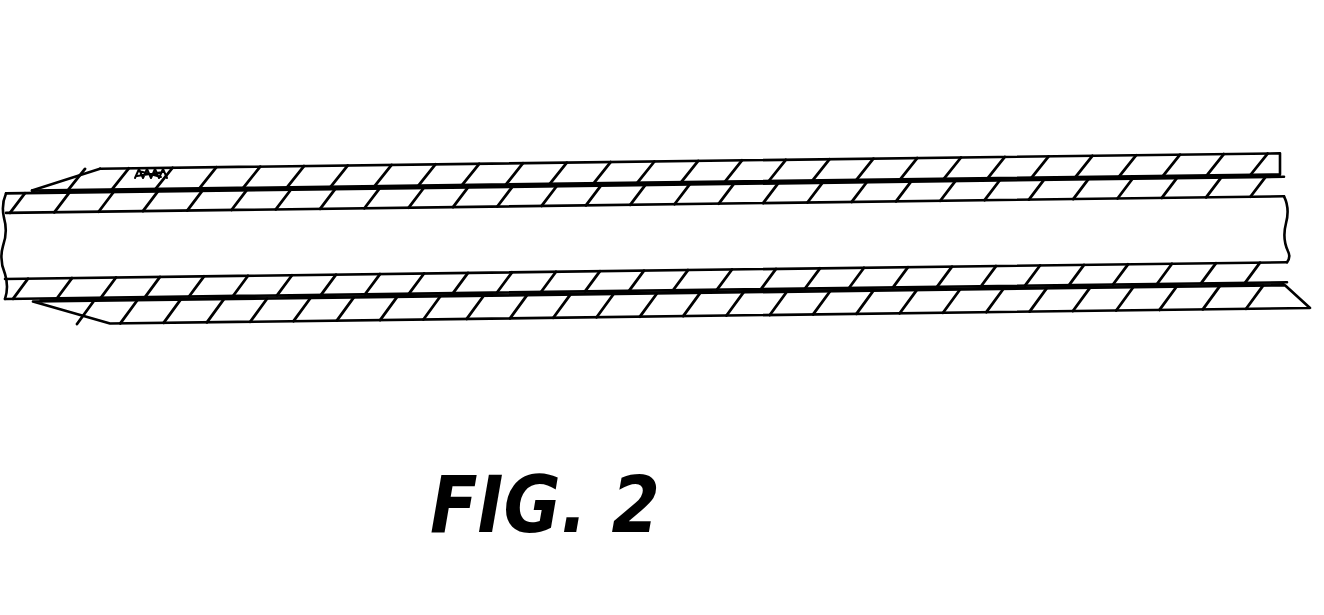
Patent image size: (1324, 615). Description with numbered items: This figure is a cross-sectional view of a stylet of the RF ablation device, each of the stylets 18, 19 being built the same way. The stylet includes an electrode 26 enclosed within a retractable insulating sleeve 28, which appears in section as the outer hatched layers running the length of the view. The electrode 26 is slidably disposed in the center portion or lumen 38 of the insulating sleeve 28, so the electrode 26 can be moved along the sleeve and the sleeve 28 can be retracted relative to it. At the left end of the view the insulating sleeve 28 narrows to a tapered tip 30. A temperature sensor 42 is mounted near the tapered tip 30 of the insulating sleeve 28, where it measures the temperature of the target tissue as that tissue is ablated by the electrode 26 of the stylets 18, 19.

The stylet 18 is at (1045, 345).
The stylet 19 is at (656, 103).
The electrode 26 is at (524, 200).
The insulating sleeve 28 is at (671, 208).
The tapered tip 30 is at (62, 183).
The lumen 38 is at (698, 185).
The temperature sensor 42 is at (150, 172).